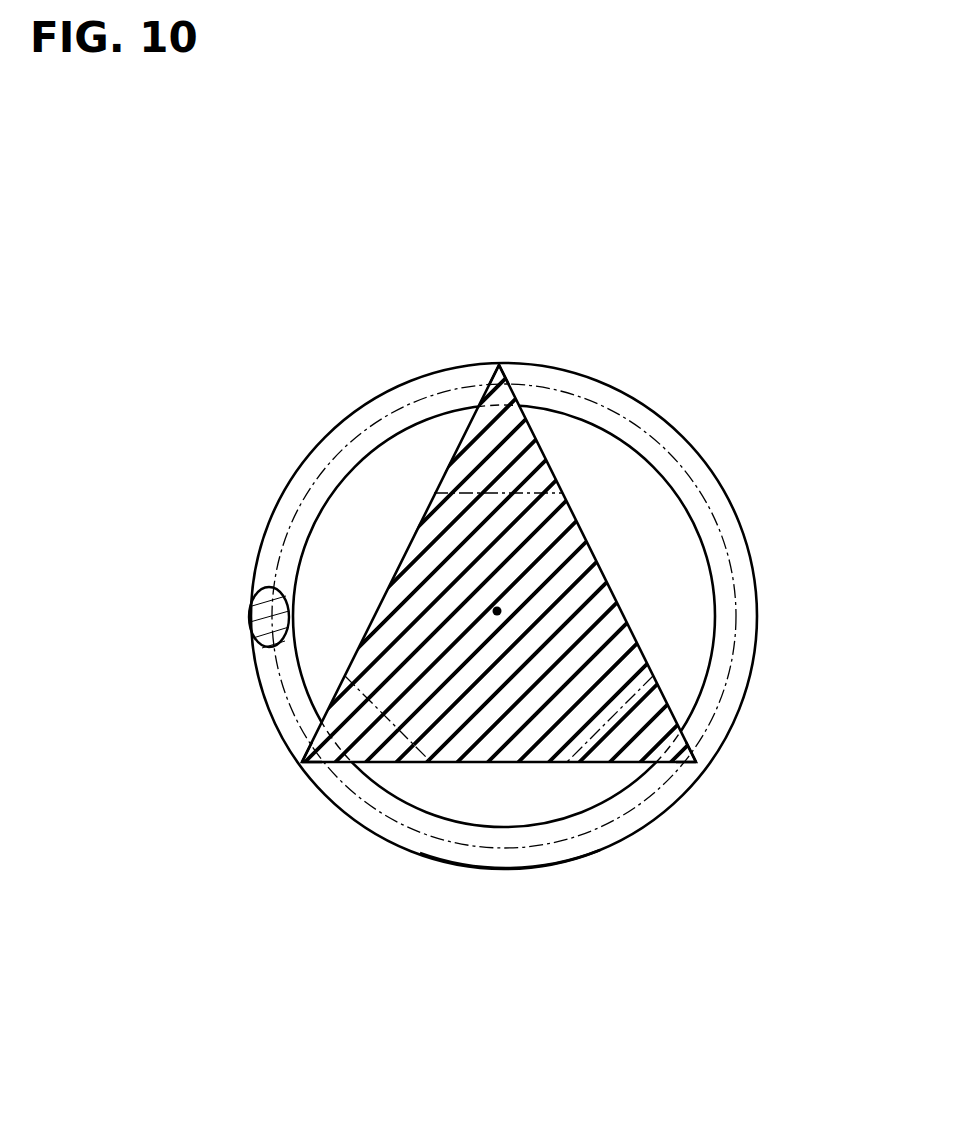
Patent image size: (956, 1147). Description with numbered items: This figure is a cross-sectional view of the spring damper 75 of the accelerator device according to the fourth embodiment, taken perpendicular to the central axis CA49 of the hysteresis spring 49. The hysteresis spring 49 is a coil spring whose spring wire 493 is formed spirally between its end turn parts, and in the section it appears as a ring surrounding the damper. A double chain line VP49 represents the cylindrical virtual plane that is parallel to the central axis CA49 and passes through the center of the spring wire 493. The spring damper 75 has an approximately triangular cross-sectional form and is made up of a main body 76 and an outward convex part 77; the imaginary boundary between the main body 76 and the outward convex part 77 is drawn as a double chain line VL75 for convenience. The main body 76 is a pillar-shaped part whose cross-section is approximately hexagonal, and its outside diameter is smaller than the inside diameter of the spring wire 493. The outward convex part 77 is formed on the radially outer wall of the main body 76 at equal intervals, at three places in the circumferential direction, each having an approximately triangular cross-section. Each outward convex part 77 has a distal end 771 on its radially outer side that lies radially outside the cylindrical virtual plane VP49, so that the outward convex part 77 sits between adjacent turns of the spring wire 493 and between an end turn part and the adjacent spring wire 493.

The hysteresis spring 49 is at (722, 747).
The spring wire 493 is at (570, 847).
The cylindrical virtual plane VP49 is at (495, 848).
The central axis of the hysteresis spring CA49 is at (502, 609).
The spring damper 75 is at (614, 581).
The main body 76 is at (567, 547).
The outward convex part 77 is at (508, 445).
The distal end 771 is at (497, 363).
The imaginary boundary VL75 is at (472, 492).